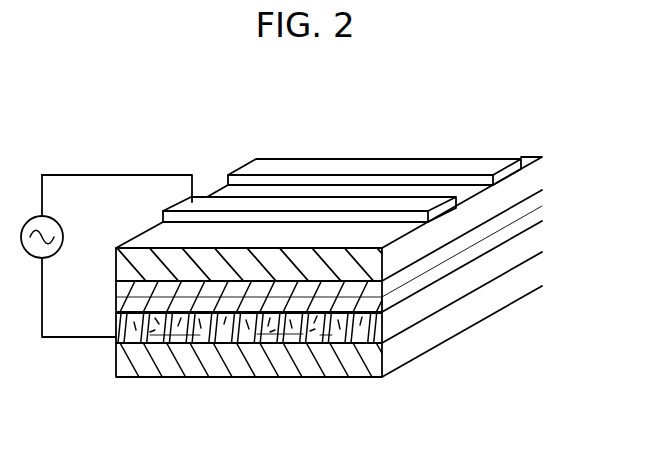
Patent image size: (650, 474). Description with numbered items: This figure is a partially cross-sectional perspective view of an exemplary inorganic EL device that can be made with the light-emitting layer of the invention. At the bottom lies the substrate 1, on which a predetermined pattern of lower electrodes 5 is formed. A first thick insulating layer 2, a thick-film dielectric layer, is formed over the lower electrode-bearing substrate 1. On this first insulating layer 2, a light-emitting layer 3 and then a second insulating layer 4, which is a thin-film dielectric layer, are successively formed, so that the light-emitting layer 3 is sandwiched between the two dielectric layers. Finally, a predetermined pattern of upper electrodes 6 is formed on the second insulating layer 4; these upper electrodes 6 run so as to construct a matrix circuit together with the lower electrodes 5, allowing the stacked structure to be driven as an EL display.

The substrate 1 is at (382, 377).
The first thick insulating layer 2 is at (382, 338).
The light-emitting layer 3 is at (117, 289).
The second insulating layer 4 is at (117, 265).
The lower electrodes 5 is at (162, 345).
The upper electrodes 6 is at (164, 210).